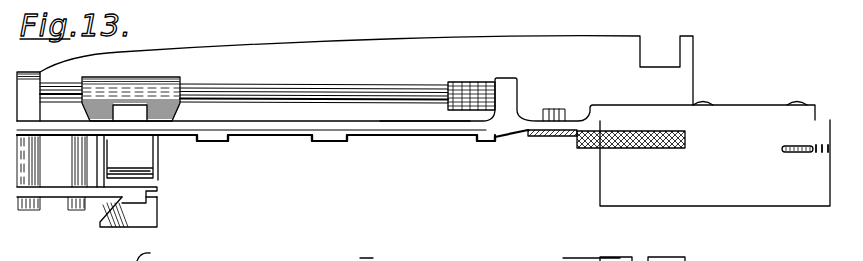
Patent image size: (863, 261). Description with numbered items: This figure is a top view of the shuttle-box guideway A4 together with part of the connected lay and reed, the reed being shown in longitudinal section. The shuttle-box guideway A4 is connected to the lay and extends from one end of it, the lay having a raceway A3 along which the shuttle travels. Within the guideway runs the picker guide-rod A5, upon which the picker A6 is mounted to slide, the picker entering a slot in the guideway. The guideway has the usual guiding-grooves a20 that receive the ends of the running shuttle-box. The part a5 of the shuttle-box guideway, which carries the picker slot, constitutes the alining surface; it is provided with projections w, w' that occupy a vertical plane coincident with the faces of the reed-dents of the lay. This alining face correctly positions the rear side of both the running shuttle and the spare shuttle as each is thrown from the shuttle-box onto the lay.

The picker A6 is at (171, 85).
The picker guide-rod A5 is at (282, 98).
The projection w is at (346, 154).
The part of the shuttle-box guideway a5 is at (418, 122).
The guiding-grooves a20 is at (158, 194).
The shuttle-box guideway A4 is at (586, 148).
The raceway A3 is at (715, 163).
The projection w' is at (805, 166).